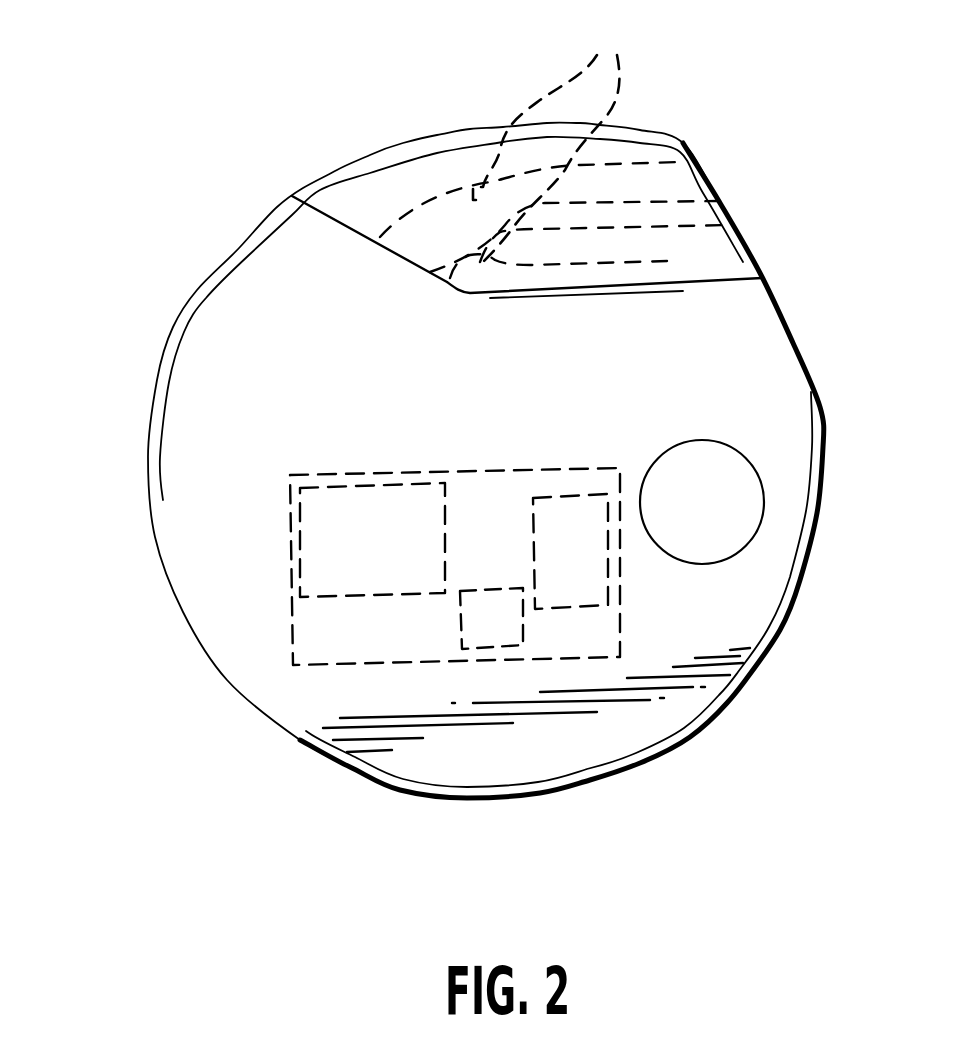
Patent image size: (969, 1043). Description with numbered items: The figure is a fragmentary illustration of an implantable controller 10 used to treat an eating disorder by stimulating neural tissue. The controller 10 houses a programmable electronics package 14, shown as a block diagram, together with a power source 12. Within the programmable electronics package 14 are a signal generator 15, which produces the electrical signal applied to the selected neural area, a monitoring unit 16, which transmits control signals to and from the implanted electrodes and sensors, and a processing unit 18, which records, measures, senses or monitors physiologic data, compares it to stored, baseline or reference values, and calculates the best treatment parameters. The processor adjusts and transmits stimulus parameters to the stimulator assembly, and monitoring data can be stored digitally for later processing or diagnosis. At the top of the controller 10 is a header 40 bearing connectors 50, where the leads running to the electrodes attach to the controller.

The controller 10 is at (173, 327).
The power source 12 is at (728, 470).
The programmable electronics package 14 is at (287, 645).
The signal generator 15 is at (558, 515).
The monitoring unit 16 is at (478, 607).
The processing unit 18 is at (352, 497).
The header 40 is at (688, 142).
The connectors 50 is at (549, 138).